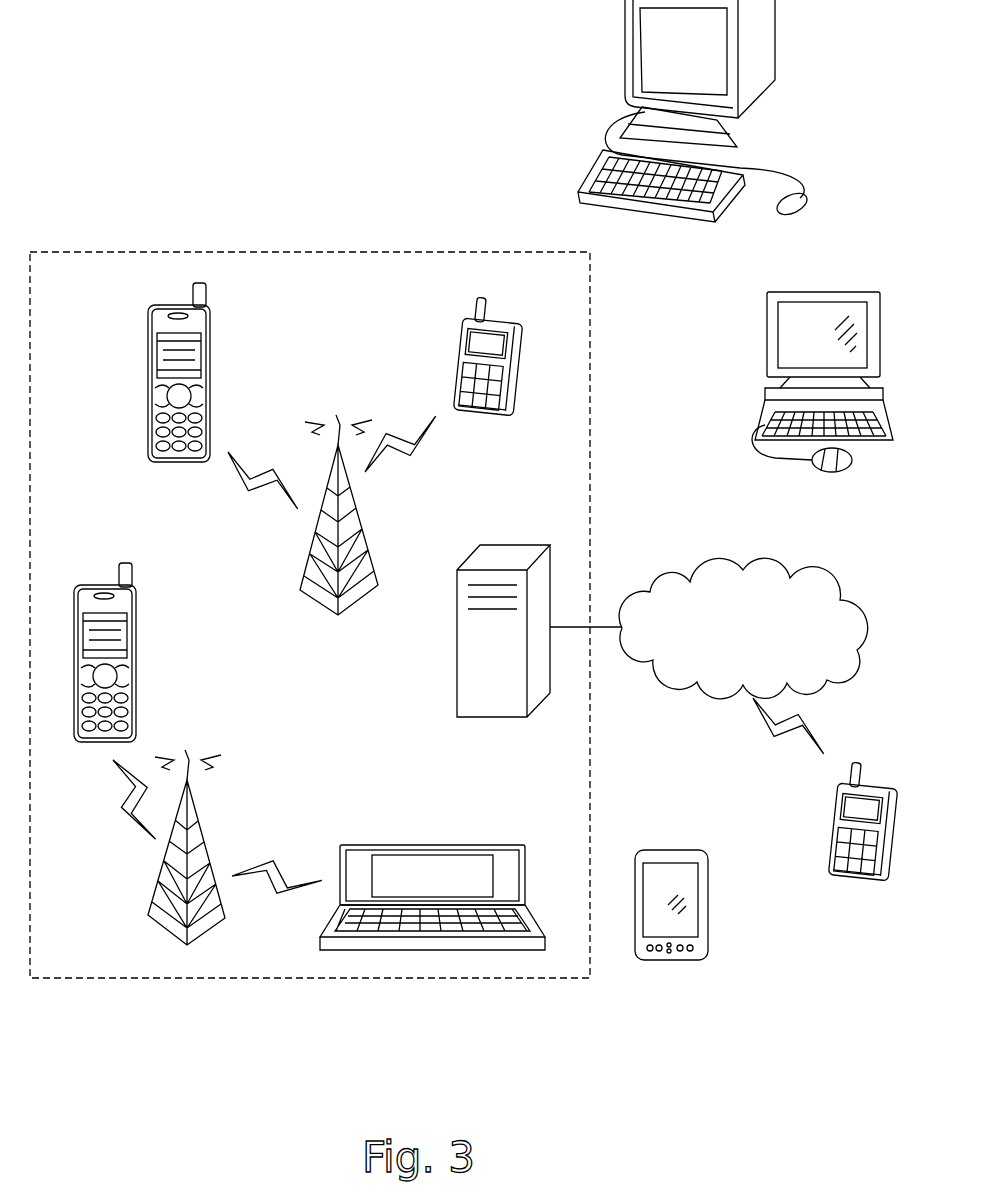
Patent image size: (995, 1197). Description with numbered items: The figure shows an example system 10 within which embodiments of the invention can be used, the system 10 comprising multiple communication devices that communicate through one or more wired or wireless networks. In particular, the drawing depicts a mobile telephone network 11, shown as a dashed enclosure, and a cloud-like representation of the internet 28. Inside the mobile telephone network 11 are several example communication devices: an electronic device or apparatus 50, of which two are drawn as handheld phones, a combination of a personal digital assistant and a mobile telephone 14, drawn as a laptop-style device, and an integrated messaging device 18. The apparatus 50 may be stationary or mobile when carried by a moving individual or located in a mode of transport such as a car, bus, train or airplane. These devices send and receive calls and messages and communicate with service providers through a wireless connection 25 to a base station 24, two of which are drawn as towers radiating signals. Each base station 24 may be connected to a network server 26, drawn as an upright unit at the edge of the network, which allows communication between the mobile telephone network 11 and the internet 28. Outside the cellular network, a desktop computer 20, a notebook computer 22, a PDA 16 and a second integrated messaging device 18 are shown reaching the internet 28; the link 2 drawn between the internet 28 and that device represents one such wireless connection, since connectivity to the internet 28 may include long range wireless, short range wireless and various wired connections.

The wireless link 2 is at (805, 720).
The system 10 is at (867, 535).
The mobile telephone network 11 is at (79, 290).
The combination of a personal digital assistant (PDA) and a mobile telephone 14 is at (417, 845).
The PDA 16 is at (708, 900).
The integrated messaging device (IMD) 18 is at (461, 370).
The desktop computer 20 is at (776, 38).
The notebook computer 22 is at (822, 292).
The base station 24 is at (355, 507).
The wireless connection 25 is at (127, 820).
The network server 26 is at (457, 637).
The internet 28 is at (655, 583).
The electronic device or apparatus 50 is at (212, 382).